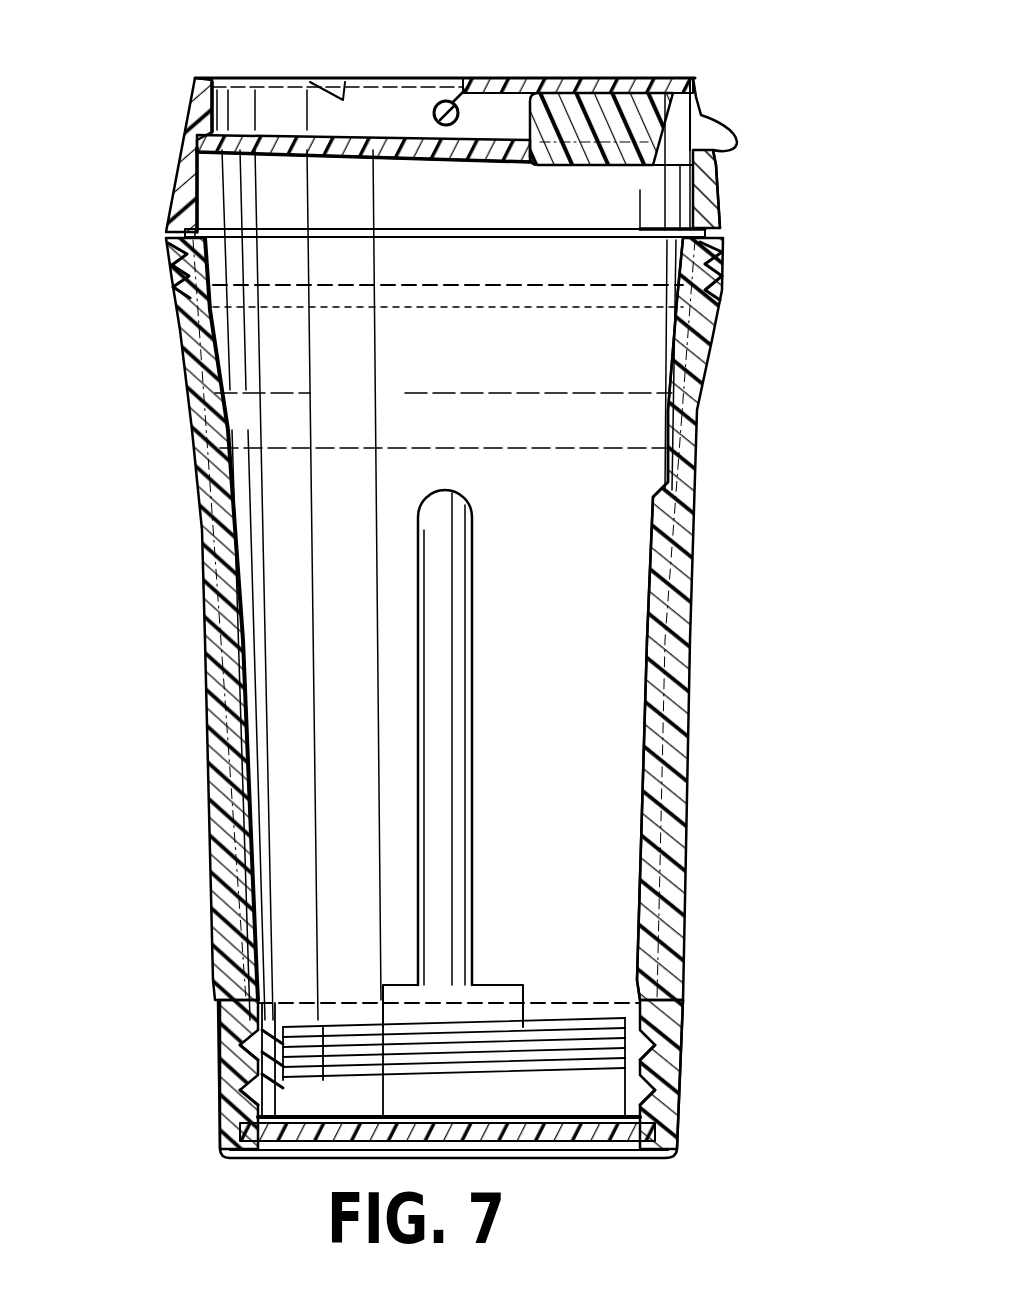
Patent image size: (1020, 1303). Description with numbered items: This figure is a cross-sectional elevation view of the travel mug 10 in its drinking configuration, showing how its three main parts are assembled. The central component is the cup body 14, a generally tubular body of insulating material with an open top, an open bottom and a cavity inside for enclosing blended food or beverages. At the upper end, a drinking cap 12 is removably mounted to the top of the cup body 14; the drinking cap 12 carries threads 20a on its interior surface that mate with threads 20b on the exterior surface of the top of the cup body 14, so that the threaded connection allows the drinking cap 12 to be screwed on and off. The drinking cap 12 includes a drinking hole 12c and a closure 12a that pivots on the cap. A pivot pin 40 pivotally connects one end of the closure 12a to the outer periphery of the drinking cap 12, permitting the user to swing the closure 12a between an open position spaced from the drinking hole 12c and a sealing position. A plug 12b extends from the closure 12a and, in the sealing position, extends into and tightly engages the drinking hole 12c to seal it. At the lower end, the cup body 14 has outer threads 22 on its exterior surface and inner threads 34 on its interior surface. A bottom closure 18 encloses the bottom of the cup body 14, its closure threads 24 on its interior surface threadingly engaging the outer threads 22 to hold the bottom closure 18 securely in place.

The travel mug 10 is at (755, 348).
The drinking cap 12 is at (178, 182).
The closure 12a is at (603, 80).
The plug 12b is at (632, 130).
The drinking hole 12c is at (653, 167).
The cup body 14 is at (205, 607).
The bottom closure 18 is at (683, 1088).
The threads 20a is at (172, 250).
The threads 20b is at (175, 272).
The outer threads 22 is at (236, 1073).
The closure threads 24 is at (218, 1040).
The inner threads 34 is at (295, 1073).
The pivot pin 40 is at (434, 103).